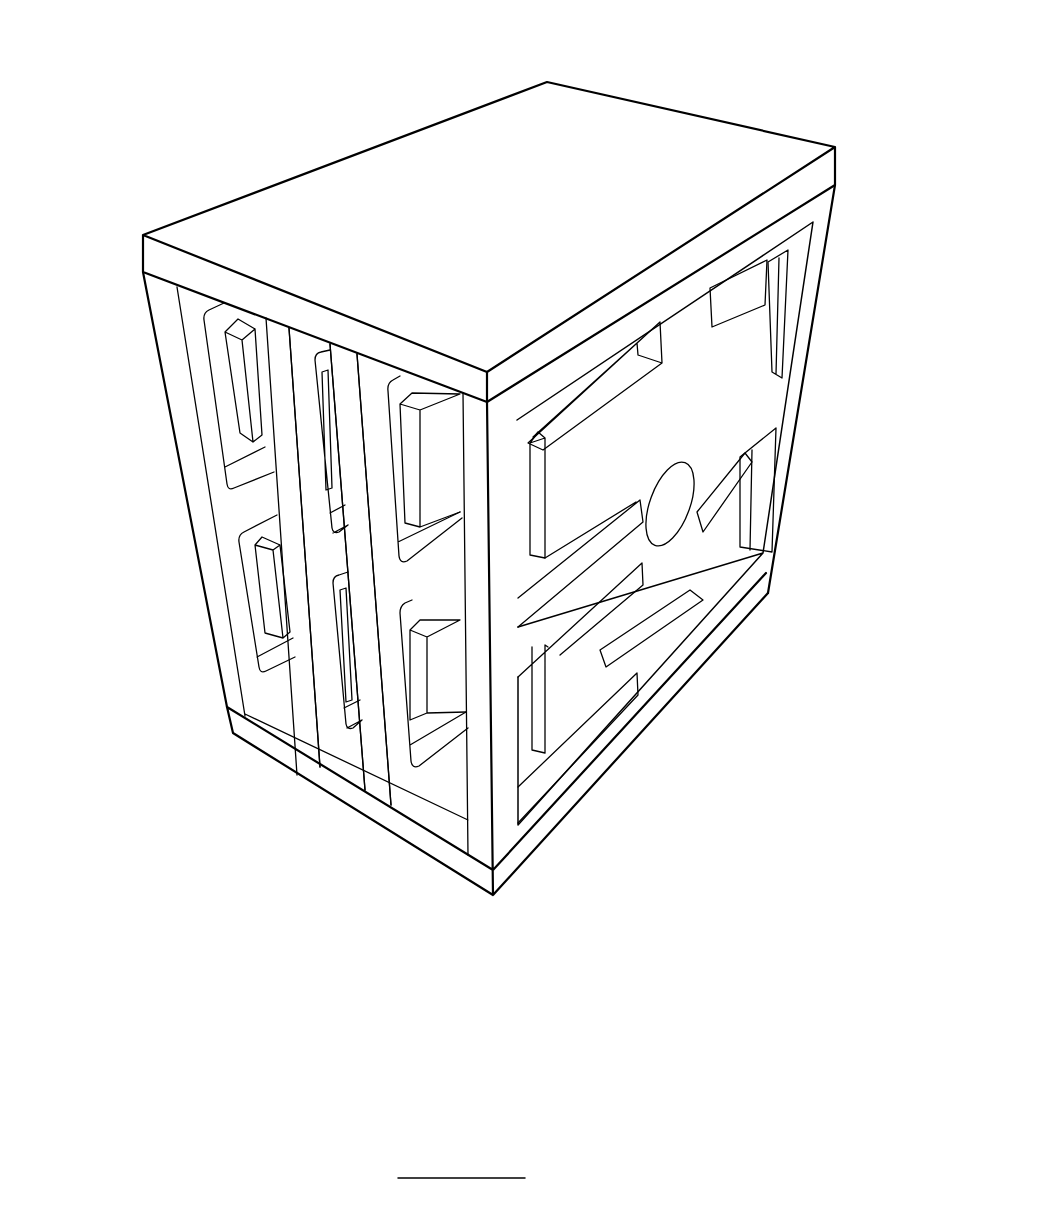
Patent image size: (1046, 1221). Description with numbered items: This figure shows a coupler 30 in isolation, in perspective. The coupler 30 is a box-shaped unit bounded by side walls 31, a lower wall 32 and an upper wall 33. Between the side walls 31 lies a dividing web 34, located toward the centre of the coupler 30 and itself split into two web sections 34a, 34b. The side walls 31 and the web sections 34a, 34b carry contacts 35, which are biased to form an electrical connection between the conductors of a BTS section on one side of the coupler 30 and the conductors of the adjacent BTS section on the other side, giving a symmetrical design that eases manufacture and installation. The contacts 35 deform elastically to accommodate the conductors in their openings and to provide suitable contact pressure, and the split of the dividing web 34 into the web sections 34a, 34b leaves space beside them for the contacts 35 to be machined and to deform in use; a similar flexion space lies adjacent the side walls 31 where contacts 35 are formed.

The coupler 30 is at (161, 212).
The side walls 31 is at (175, 375).
The lower wall 32 is at (262, 750).
The upper wall 33 is at (298, 246).
The dividing web 34 is at (405, 833).
The web section 34a is at (318, 740).
The web section 34b is at (385, 752).
The contacts 35 is at (428, 405).